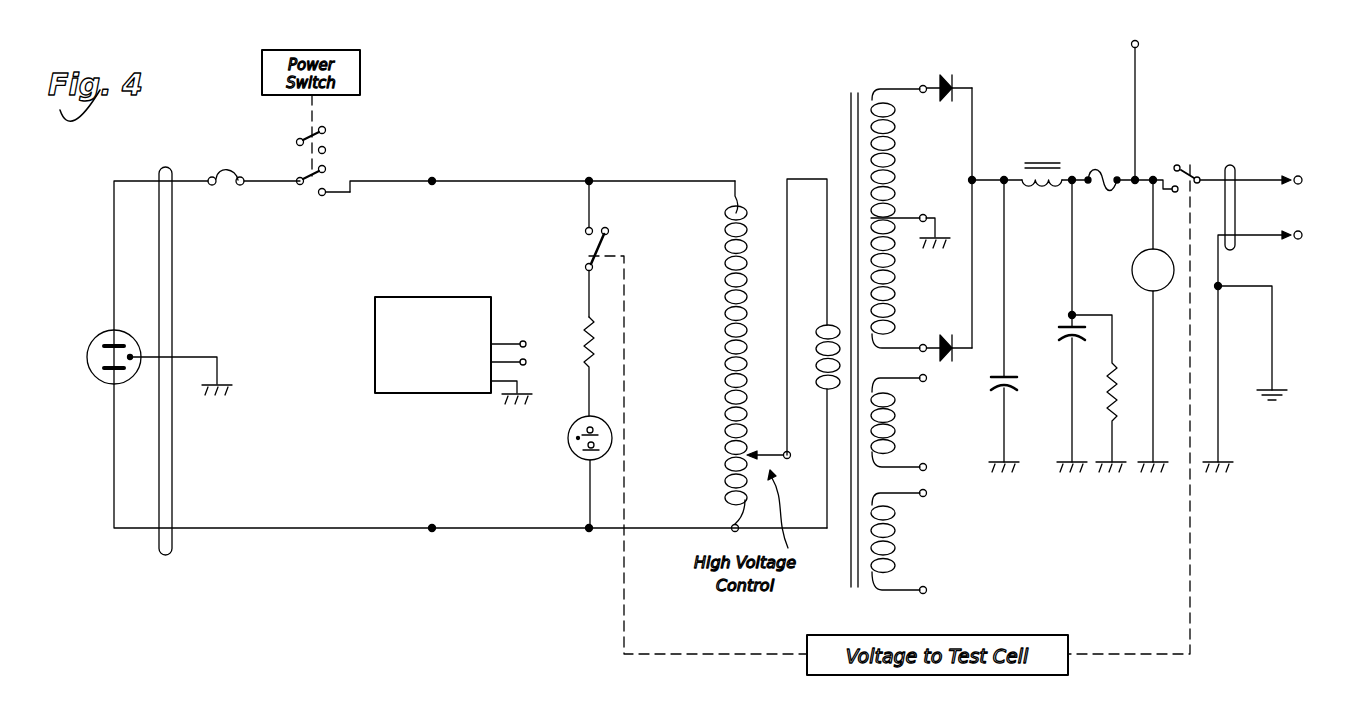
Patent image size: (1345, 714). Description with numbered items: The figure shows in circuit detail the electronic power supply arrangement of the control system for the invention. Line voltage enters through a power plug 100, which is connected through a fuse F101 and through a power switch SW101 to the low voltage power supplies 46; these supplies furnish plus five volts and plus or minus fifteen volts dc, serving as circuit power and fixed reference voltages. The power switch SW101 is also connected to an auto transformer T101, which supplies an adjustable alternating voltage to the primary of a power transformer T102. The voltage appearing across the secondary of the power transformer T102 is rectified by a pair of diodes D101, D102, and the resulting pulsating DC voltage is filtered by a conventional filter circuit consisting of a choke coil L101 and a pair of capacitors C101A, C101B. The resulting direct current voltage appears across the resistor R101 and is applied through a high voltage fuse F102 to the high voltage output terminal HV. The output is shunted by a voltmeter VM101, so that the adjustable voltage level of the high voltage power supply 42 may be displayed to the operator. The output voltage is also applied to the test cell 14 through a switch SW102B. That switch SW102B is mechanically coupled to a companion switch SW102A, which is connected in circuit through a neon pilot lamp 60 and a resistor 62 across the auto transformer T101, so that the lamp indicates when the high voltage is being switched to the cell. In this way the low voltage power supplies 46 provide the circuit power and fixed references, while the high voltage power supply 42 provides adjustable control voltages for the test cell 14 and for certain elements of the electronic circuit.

The power plug 100 is at (92, 342).
The low voltage power supplies 46 is at (396, 297).
The resistor 62 is at (587, 321).
The neon pilot lamp 60 is at (577, 442).
The high voltage power supply 42 is at (976, 308).
The test cell 14 is at (1251, 318).
The fuse F101 is at (241, 187).
The power switch SW101 is at (336, 154).
The switch SW102A is at (584, 242).
The switch SW102B is at (1179, 165).
The auto transformer T101 is at (751, 197).
The power transformer T102 is at (833, 167).
The diode D101 is at (940, 82).
The diode D102 is at (955, 336).
The choke coil L101 is at (1046, 160).
The high voltage fuse F102 is at (1097, 183).
The high voltage output terminal HV is at (1133, 101).
The capacitor C101A is at (998, 391).
The capacitor C101B is at (1068, 343).
The resistor R101 is at (1113, 418).
The voltmeter VM101 is at (1134, 275).